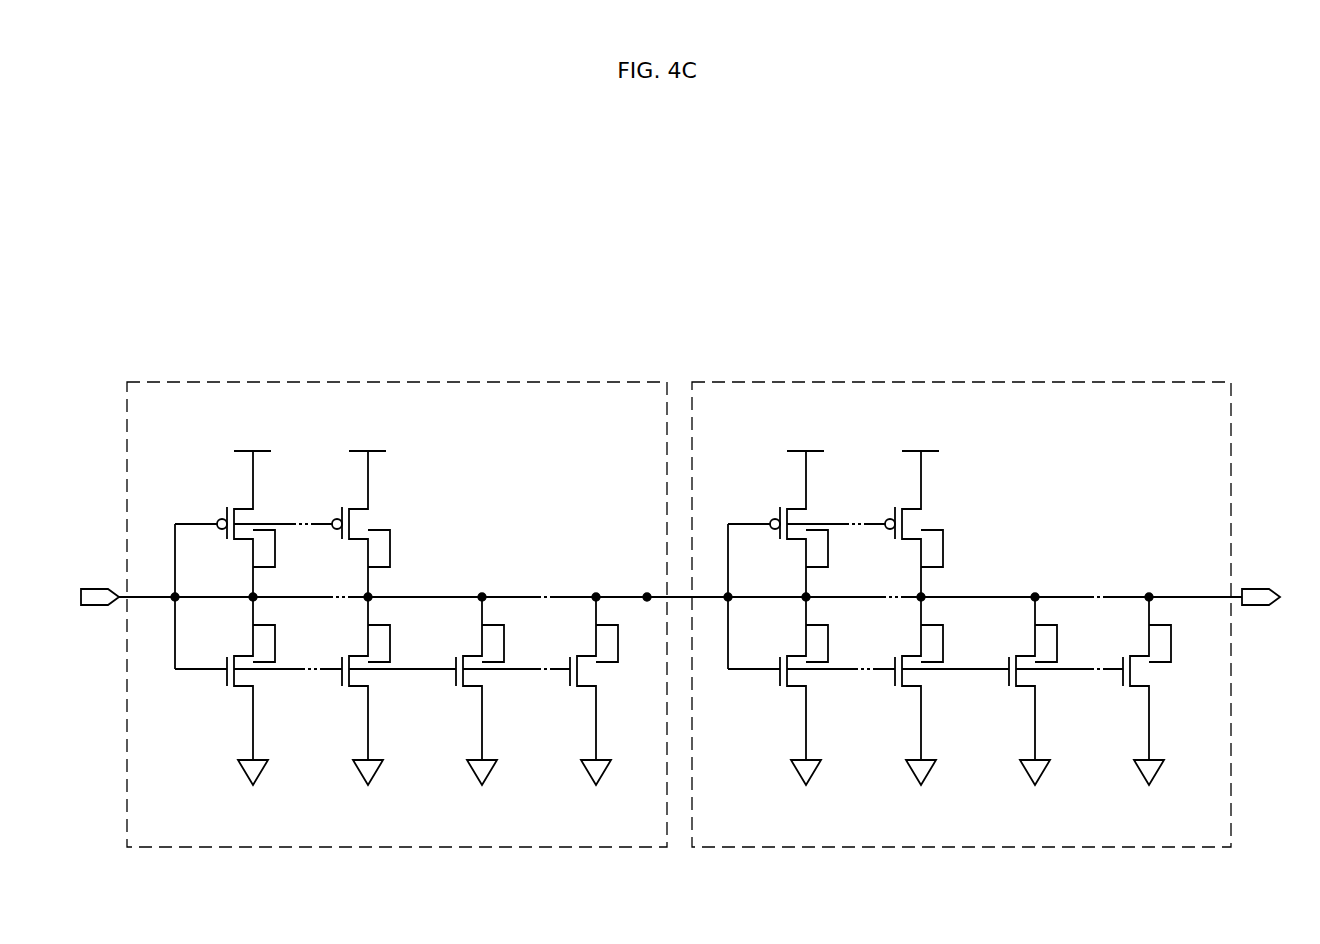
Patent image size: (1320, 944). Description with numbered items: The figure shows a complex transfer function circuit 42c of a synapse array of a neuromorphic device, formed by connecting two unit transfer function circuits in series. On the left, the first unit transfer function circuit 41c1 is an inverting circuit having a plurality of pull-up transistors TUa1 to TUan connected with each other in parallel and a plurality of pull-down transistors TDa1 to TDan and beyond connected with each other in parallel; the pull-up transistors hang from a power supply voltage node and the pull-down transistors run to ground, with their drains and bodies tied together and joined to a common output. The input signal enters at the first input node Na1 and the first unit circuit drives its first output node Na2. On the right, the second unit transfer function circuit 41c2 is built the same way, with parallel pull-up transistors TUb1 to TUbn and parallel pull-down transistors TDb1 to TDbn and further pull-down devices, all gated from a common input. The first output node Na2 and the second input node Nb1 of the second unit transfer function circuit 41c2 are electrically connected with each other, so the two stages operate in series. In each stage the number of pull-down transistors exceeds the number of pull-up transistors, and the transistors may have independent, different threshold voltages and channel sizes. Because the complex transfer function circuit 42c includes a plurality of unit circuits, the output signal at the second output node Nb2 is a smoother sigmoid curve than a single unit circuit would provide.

The complex transfer function circuit 42c is at (677, 287).
The first unit transfer function circuit 41c1 is at (365, 378).
The second unit transfer function circuit 41c2 is at (866, 378).
The pull-up transistor TUa1 is at (228, 502).
The pull-up transistor TUan is at (343, 501).
The pull-down transistor TDa1 is at (227, 692).
The pull-down transistor TDan is at (342, 692).
The pull-up transistor TUb1 is at (781, 502).
The pull-up transistor TUbn is at (896, 501).
The pull-down transistor TDb1 is at (780, 692).
The pull-down transistor TDbn is at (895, 692).
The first input node Na1 is at (95, 584).
The first output node Na2 is at (646, 584).
The second input node Nb1 is at (713, 584).
The second output node Nb2 is at (1271, 584).